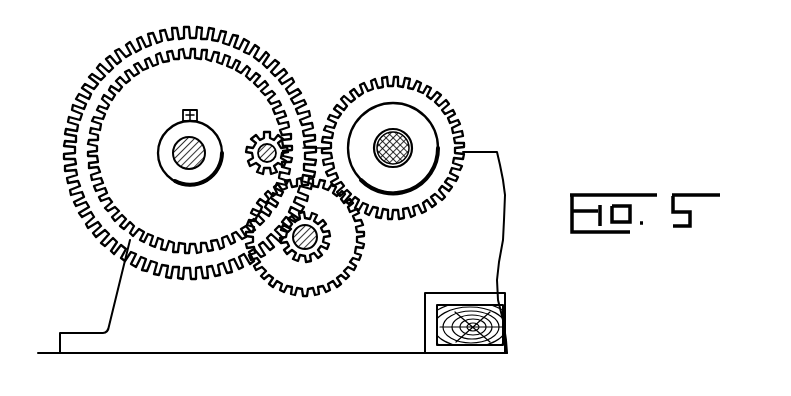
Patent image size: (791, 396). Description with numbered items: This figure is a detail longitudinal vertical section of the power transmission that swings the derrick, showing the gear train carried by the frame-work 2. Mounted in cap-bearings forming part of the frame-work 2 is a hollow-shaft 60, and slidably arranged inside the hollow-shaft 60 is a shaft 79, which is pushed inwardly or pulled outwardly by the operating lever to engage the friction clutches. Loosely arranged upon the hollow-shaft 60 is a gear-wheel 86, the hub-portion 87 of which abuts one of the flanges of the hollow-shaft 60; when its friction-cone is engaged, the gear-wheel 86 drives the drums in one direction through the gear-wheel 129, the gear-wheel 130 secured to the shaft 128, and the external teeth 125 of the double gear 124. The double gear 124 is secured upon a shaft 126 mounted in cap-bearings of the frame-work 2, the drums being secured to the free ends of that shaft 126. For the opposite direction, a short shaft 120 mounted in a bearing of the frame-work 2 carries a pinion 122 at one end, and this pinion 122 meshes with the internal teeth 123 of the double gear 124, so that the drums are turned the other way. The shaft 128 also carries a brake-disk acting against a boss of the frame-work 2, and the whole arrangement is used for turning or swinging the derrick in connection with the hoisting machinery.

The frame-work 2 is at (483, 190).
The hollow-shaft 60 is at (404, 140).
The shaft 79 is at (397, 134).
The gear-wheel 86 is at (437, 121).
The hub-portion 87 is at (418, 142).
The short shaft 120 is at (262, 168).
The pinion 122 is at (258, 148).
The internal teeth 123 is at (190, 244).
The double gear 124 is at (166, 162).
The external teeth 125 is at (187, 276).
The shaft 126 is at (195, 146).
The shaft 128 is at (302, 249).
The gear-wheel 129 is at (340, 260).
The gear-wheel 130 is at (314, 256).